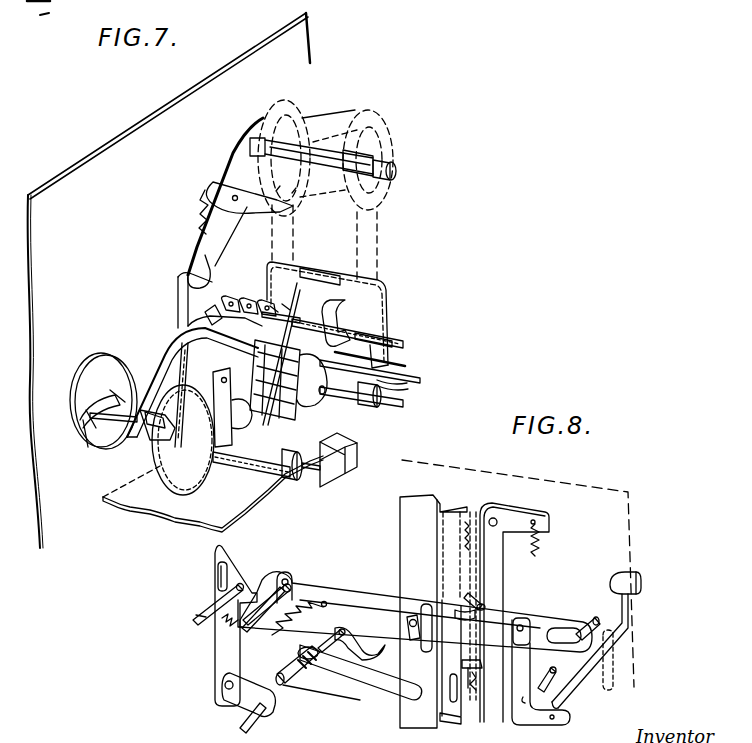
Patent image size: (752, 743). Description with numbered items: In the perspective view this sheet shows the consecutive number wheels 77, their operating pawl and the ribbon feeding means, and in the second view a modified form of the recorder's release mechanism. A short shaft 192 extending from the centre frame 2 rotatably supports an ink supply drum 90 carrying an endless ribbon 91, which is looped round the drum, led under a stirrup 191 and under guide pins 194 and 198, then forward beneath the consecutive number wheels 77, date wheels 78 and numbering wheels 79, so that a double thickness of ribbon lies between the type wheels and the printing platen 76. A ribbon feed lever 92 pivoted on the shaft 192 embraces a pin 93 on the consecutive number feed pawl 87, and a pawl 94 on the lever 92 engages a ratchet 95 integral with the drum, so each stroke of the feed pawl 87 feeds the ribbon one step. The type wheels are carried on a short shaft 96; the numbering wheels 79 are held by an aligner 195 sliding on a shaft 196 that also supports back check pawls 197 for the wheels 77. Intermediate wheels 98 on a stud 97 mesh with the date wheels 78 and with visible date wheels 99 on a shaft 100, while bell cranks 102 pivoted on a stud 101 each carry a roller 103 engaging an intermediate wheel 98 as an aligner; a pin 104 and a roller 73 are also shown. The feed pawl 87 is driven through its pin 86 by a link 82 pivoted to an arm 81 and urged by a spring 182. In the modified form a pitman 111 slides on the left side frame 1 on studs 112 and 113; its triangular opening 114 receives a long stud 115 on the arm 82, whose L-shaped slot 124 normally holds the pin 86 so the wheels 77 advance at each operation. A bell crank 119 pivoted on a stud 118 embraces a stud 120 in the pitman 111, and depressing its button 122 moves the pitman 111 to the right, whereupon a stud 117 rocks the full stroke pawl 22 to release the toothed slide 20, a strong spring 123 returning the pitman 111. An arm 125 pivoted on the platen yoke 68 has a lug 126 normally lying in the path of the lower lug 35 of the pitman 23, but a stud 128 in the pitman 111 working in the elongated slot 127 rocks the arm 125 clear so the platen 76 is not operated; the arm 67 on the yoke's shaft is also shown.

In FIG. 7, the centre frame 2 is at (220, 85).
In FIG. 7, the ink supply drum 90 is at (365, 113).
In FIG. 7, the ratchet 95 is at (287, 99).
In FIG. 7, the ribbon 91 is at (347, 221).
In FIG. 7, the short shaft 192 is at (396, 172).
In FIG. 7, the ribbon feed lever 92 is at (233, 170).
In FIG. 7, the pawl 94 is at (263, 210).
In FIG. 7, the stirrup 191 is at (340, 270).
In FIG. 7, the stud 101 is at (367, 275).
In FIG. 7, the bell cranks 102 is at (345, 310).
In FIG. 7, the numbering wheels 79 is at (356, 330).
In FIG. 7, the pin 104 is at (315, 315).
In FIG. 7, the aligner 195 is at (378, 333).
In FIG. 7, the shaft 196 is at (383, 358).
In FIG. 7, the short shaft 96 is at (393, 370).
In FIG. 7, the guide pin 198 is at (392, 383).
In FIG. 7, the guide pin 194 is at (382, 407).
In FIG. 7, the pin 93 is at (177, 277).
In FIG. 7, the consecutive number wheels 77 is at (172, 322).
In FIG. 7, the consecutive number feed pawl 87 is at (180, 353).
In FIG. 7, the roller 103 is at (190, 377).
In FIG. 7, the pin 86 is at (115, 410).
In FIG. 8, the pin 86 is at (210, 615).
In FIG. 7, the link 82 is at (84, 422).
In FIG. 8, the link 82 is at (225, 657).
In FIG. 7, the shaft 100 is at (165, 444).
In FIG. 7, the visible date wheels 99 is at (157, 467).
In FIG. 7, the intermediate wheels 98 is at (266, 470).
In FIG. 7, the stud 97 is at (253, 420).
In FIG. 7, the printing platen 76 is at (330, 473).
In FIG. 7, the date wheels 78 is at (242, 298).
In FIG. 7, the back check pawls 197 is at (213, 313).
In FIG. 8, the left side frame 1 is at (592, 502).
In FIG. 8, the slide 20 is at (405, 523).
In FIG. 8, the full stroke pawl 22 is at (493, 562).
In FIG. 8, the stud 117 is at (478, 600).
In FIG. 8, the stud 120 is at (520, 618).
In FIG. 8, the button 122 is at (617, 575).
In FIG. 8, the stud 118 is at (550, 685).
In FIG. 8, the pitman 111 is at (350, 595).
In FIG. 8, the stud 113 is at (592, 620).
In FIG. 8, the bell crank 119 is at (524, 688).
In FIG. 8, the pitman 23 is at (453, 652).
In FIG. 8, the lower lug 35 is at (459, 717).
In FIG. 8, the lug 126 is at (457, 722).
In FIG. 8, the stud 128 is at (412, 620).
In FIG. 8, the elongated slot 127 is at (413, 633).
In FIG. 8, the arm 67 is at (364, 645).
In FIG. 8, the arm 125 is at (413, 686).
In FIG. 8, the roller 73 is at (318, 701).
In FIG. 8, the yoke 68 is at (314, 644).
In FIG. 8, the triangular opening 114 is at (288, 593).
In FIG. 8, the long stud 115 is at (279, 583).
In FIG. 8, the L-shaped slot 124 is at (218, 568).
In FIG. 8, the stud 112 is at (227, 594).
In FIG. 8, the spring 182 is at (240, 617).
In FIG. 8, the strong spring 123 is at (208, 629).
In FIG. 8, the arm 81 is at (243, 710).